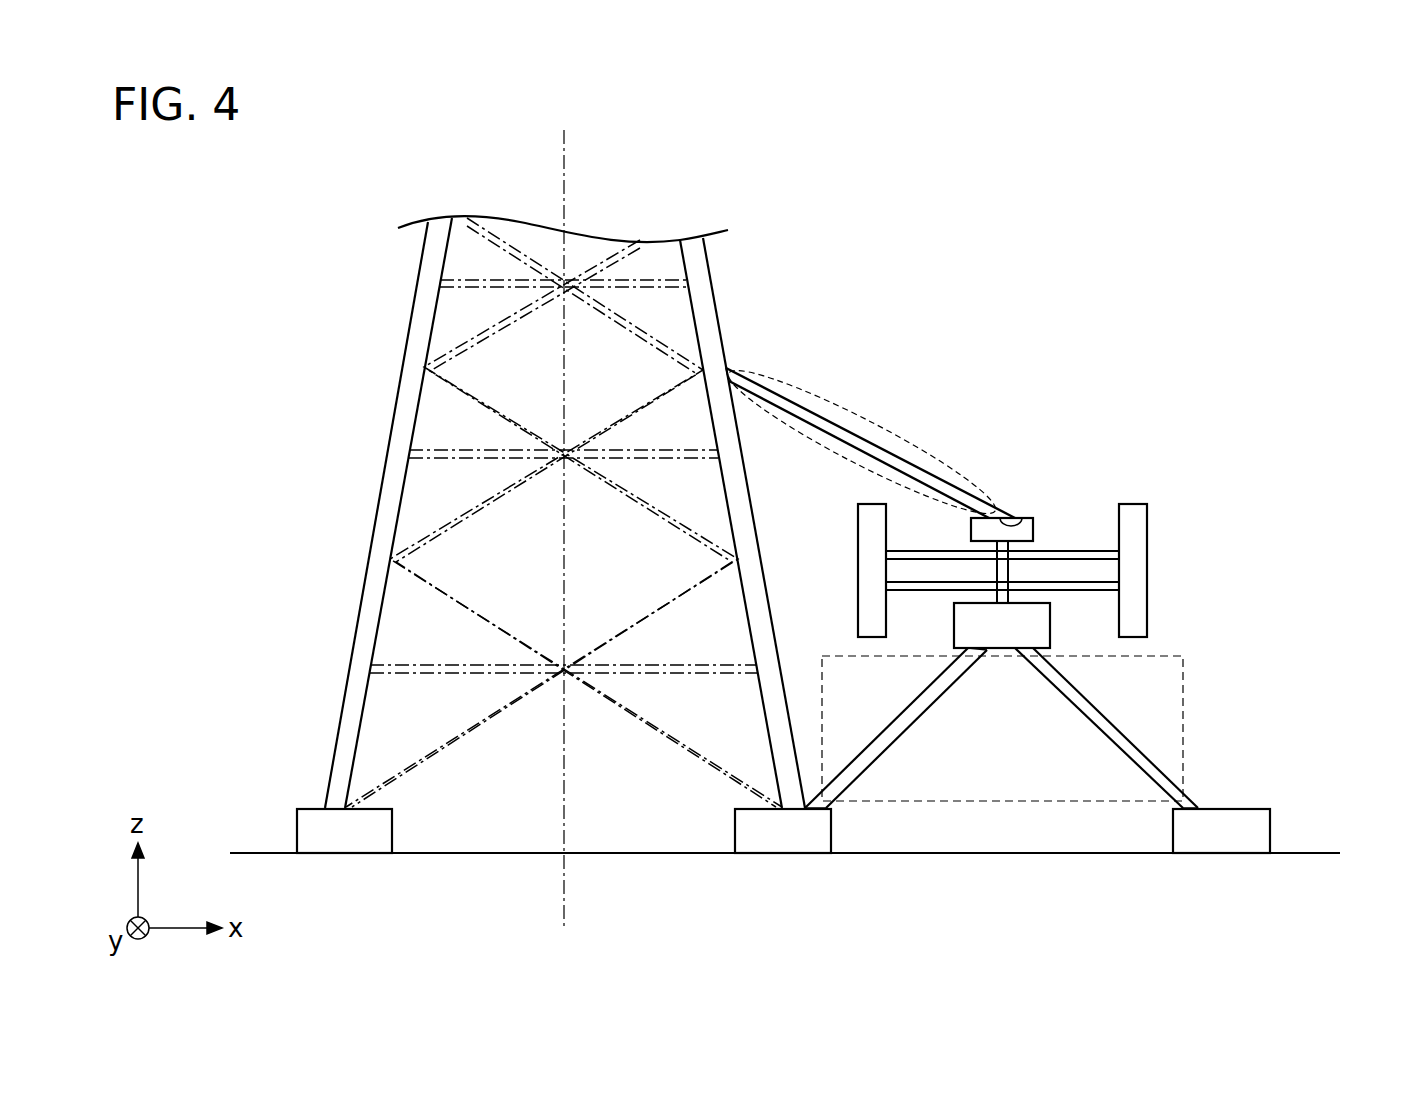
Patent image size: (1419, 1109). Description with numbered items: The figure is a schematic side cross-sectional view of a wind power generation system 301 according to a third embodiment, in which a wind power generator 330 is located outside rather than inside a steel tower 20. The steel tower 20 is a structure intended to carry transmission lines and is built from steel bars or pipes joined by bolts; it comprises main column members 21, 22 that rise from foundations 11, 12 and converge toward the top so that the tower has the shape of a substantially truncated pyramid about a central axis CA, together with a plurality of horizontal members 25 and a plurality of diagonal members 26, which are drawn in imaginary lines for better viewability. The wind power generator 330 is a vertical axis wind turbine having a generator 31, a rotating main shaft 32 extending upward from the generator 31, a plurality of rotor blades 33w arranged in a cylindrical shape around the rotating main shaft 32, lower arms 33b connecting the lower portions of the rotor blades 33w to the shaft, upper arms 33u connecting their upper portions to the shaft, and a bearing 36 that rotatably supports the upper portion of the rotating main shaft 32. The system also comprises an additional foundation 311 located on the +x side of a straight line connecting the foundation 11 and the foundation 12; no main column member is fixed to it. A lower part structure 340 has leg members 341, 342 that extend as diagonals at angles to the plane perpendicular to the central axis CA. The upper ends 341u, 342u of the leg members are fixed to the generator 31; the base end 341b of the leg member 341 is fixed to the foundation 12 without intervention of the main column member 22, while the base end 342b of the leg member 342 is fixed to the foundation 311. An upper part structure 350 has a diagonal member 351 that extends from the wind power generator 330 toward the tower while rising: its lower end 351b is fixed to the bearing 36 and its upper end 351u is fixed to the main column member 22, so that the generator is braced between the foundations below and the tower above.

The foundation 11 is at (323, 837).
The foundation 12 is at (762, 837).
The steel tower 20 is at (506, 472).
The main column member 21 is at (438, 237).
The main column member 22 is at (692, 238).
The horizontal member 25 is at (490, 278).
The diagonal member 26 is at (463, 400).
The generator 31 is at (1033, 610).
The rotating main shaft 32 is at (1003, 572).
The upper arm 33u is at (1078, 553).
The rotor blade 33w is at (1137, 535).
The lower arm 33b is at (1090, 587).
The bearing 36 is at (1028, 532).
The wind power generation system 301 is at (1307, 164).
The foundation 311 is at (1243, 837).
The wind power generator 330 is at (1127, 655).
The lower part structure 340 is at (1043, 783).
The leg member 341 is at (920, 712).
The upper end of leg member 341u is at (982, 650).
The base end of leg member 341b is at (812, 813).
The leg member 342 is at (1107, 730).
The upper end of leg member 342u is at (1023, 645).
The base end of leg member 342b is at (1190, 813).
The upper part structure 350 is at (884, 403).
The diagonal member 351 is at (912, 473).
The upper end of diagonal member 351u is at (722, 374).
The lower end of diagonal member 351b is at (1022, 515).
The central axis CA is at (563, 140).